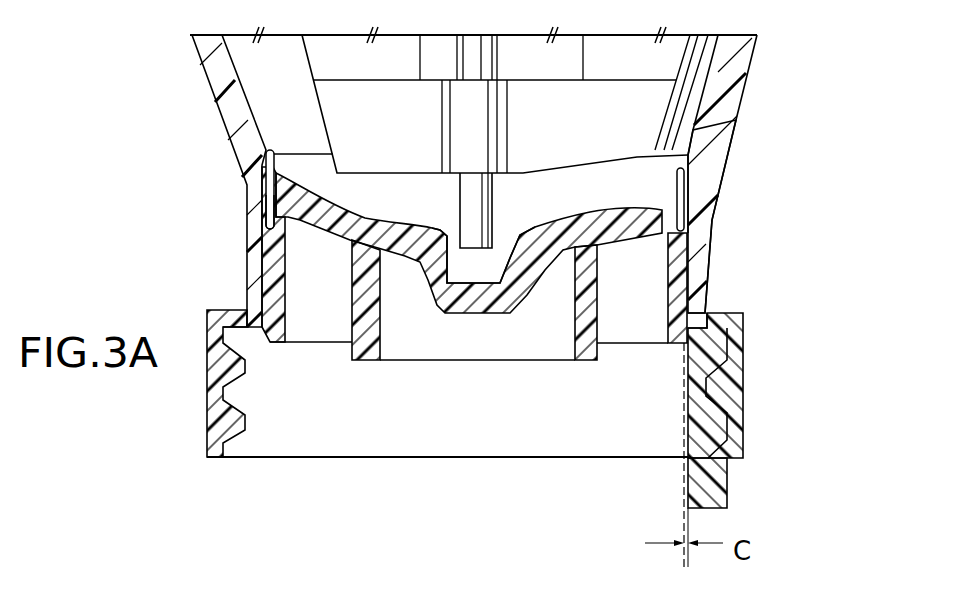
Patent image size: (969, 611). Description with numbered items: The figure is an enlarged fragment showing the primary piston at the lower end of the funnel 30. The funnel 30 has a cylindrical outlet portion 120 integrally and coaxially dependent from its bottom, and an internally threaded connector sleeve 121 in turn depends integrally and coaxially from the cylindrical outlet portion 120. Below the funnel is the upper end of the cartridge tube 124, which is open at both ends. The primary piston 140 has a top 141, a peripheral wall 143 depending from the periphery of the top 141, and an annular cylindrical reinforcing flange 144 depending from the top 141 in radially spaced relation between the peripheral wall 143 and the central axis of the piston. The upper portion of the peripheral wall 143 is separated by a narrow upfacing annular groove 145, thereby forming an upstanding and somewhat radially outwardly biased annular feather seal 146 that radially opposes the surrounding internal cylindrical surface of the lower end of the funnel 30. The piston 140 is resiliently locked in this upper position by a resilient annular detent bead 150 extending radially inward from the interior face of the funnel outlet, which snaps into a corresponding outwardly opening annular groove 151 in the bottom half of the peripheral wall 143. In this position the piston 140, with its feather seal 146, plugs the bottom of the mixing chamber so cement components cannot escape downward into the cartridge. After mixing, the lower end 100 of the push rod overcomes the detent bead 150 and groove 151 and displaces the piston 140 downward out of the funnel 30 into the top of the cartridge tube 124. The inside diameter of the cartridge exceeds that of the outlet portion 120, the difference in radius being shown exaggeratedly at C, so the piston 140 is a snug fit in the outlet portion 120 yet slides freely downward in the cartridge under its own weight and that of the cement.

The funnel 30 is at (762, 49).
The lower end of push rod 100 is at (478, 208).
The cylindrical outlet portion 120 is at (700, 226).
The connector sleeve 121 is at (744, 382).
The tube 124 is at (728, 506).
The primary piston 140 is at (288, 175).
The top 141 is at (385, 213).
The peripheral wall 143 is at (273, 278).
The reinforcing flange 144 is at (587, 353).
The annular groove 145 is at (266, 150).
The feather seal 146 is at (264, 214).
The detent bead 150 is at (667, 300).
The annular groove 151 is at (707, 303).